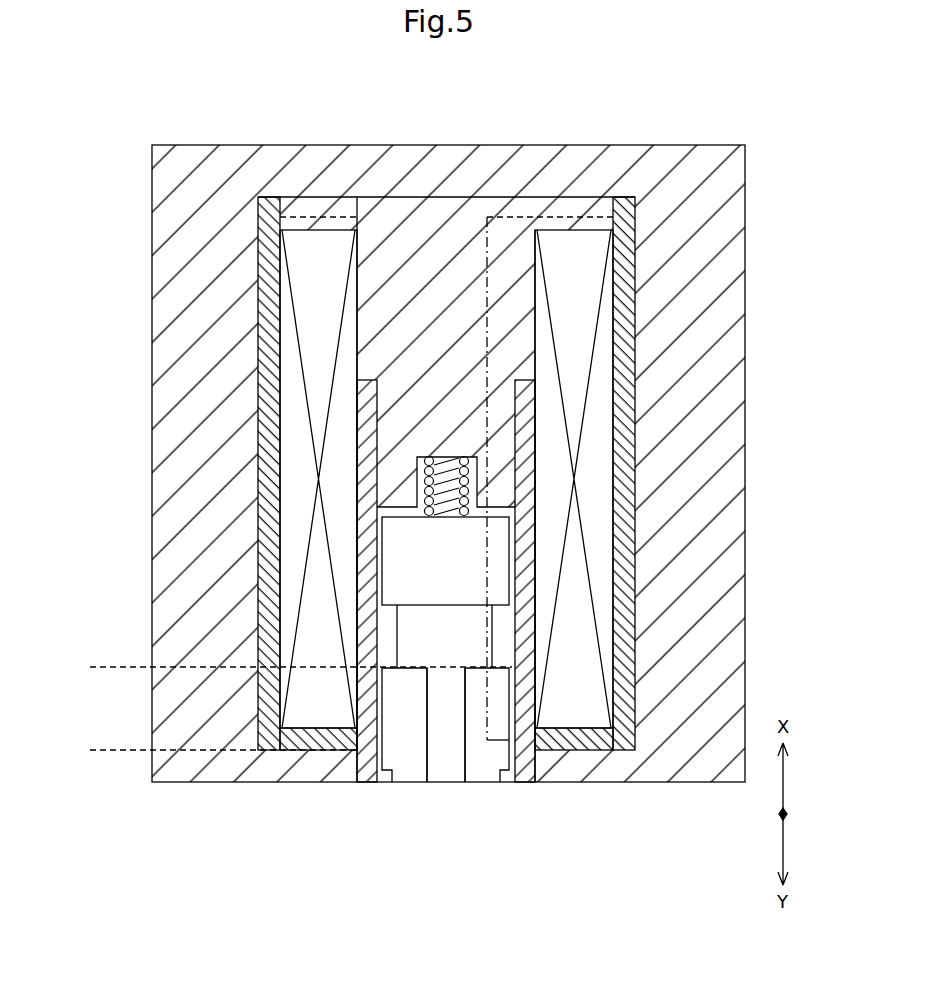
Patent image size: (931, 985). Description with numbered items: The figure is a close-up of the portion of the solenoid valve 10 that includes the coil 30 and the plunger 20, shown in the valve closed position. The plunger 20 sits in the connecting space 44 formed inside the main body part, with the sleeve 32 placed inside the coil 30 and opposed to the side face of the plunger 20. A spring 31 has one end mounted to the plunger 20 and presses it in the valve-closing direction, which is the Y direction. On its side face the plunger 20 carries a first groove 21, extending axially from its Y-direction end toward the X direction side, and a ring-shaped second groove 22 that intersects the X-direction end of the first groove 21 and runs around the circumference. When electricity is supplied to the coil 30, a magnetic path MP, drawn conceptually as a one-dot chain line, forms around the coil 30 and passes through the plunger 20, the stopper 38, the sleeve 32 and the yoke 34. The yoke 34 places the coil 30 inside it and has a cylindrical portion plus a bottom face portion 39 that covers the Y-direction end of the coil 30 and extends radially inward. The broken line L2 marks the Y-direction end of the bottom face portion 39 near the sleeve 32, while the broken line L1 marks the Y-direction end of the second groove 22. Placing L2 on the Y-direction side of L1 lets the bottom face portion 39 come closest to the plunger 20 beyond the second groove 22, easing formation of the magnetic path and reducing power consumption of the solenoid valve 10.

The solenoid valve 10 is at (668, 124).
The plunger 20 is at (497, 588).
The first groove 21 is at (452, 757).
The second groove 22 is at (410, 623).
The coil 30 is at (290, 468).
The spring 31 is at (478, 468).
The sleeve 32 is at (525, 540).
The yoke 34 is at (272, 303).
The stopper 38 is at (383, 233).
The bottom face portion 39 is at (326, 745).
The connecting space 44 is at (385, 653).
The magnetic path MP is at (637, 272).
The broken line L1 is at (286, 665).
The broken line L2 is at (208, 749).